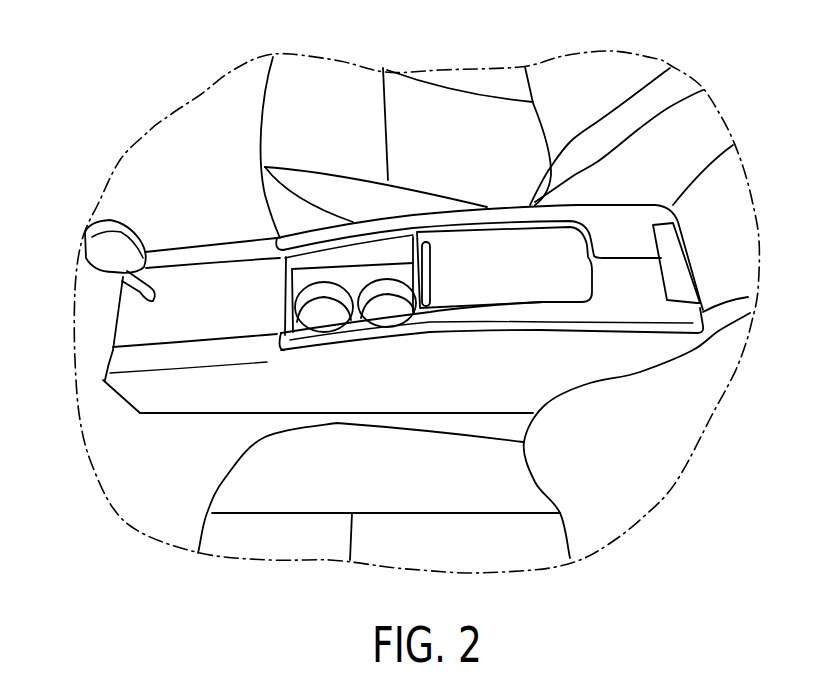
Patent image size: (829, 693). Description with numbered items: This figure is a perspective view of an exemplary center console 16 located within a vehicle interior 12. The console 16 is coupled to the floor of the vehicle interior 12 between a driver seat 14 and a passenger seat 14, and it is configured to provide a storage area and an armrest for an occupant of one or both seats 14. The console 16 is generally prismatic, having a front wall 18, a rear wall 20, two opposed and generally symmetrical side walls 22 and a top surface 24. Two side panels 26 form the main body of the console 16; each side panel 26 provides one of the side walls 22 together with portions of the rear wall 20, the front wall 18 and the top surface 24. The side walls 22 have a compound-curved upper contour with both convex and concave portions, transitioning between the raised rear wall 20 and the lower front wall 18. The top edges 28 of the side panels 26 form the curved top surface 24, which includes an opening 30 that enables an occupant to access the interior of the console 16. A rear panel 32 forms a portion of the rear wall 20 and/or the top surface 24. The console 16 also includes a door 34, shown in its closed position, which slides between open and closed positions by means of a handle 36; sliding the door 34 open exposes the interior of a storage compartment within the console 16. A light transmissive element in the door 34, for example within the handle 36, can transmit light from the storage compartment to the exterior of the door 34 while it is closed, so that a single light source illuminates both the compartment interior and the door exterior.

The vehicle interior 12 is at (218, 128).
The seat 14 is at (293, 82).
The center console 16 is at (208, 452).
The front wall 18 is at (117, 308).
The rear wall 20 is at (748, 297).
The side wall 22 is at (388, 214).
The top surface 24 is at (623, 220).
The side panel 26 is at (178, 400).
The top edge 28 is at (122, 358).
The opening 30 is at (544, 306).
The rear panel 32 is at (677, 257).
The door 34 is at (540, 258).
The handle 36 is at (431, 272).